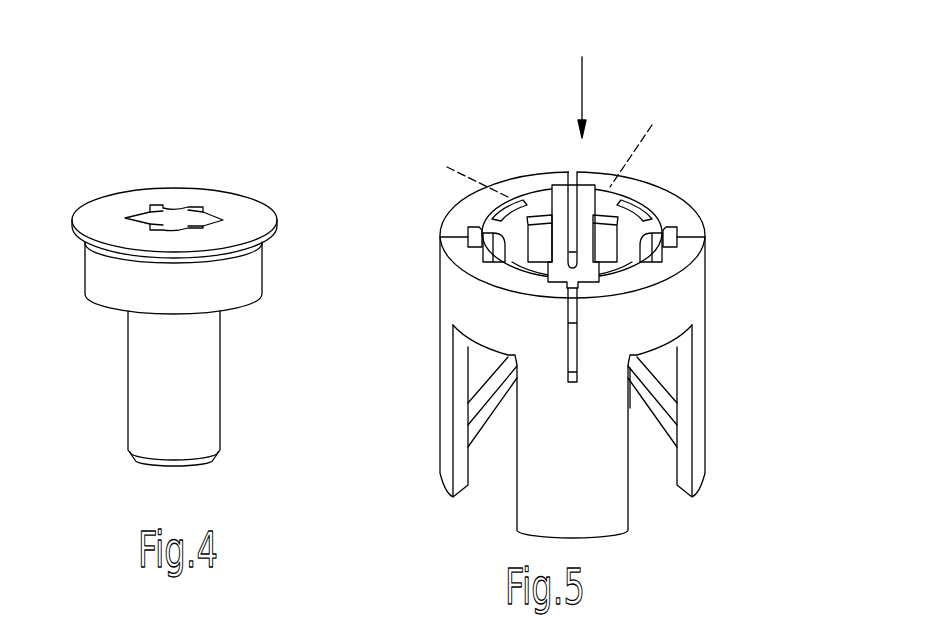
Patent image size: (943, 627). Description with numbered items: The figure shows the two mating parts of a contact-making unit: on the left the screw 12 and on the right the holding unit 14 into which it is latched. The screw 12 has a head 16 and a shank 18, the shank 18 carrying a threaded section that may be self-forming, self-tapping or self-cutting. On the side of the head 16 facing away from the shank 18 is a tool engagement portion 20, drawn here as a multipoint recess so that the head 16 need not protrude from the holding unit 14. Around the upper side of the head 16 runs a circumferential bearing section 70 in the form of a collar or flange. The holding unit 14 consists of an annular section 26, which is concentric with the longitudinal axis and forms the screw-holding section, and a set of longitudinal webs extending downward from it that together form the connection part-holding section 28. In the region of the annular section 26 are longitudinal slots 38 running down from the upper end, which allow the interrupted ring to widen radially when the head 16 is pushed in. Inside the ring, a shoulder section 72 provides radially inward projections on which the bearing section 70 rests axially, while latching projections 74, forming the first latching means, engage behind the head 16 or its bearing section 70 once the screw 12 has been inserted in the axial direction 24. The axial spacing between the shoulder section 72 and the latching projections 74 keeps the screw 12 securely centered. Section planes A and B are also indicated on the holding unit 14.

In FIG. 4, the screw 12 is at (259, 159).
In FIG. 4, the tool engagement portion 20 is at (173, 218).
In FIG. 4, the circumferential bearing section 70 is at (272, 238).
In FIG. 4, the head 16 is at (278, 265).
In FIG. 4, the shank 18 is at (152, 369).
In FIG. 5, the holding unit 14 is at (731, 108).
In FIG. 5, the axial direction 24 is at (582, 65).
In FIG. 5, the latching projections 74 is at (525, 205).
In FIG. 5, the shoulder section 72 is at (607, 232).
In FIG. 5, the longitudinal slots 38 is at (568, 294).
In FIG. 5, the annular section 26 is at (737, 265).
In FIG. 5, the connection part-holding section 28 is at (722, 390).
In FIG. 5, the section A is at (458, 162).
In FIG. 5, the section B is at (652, 138).